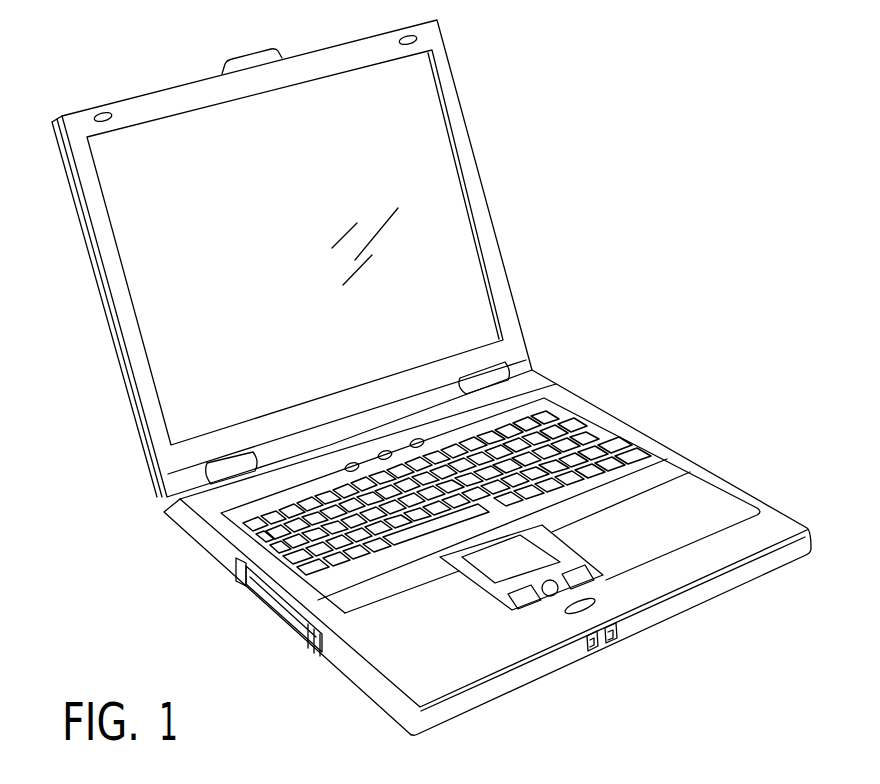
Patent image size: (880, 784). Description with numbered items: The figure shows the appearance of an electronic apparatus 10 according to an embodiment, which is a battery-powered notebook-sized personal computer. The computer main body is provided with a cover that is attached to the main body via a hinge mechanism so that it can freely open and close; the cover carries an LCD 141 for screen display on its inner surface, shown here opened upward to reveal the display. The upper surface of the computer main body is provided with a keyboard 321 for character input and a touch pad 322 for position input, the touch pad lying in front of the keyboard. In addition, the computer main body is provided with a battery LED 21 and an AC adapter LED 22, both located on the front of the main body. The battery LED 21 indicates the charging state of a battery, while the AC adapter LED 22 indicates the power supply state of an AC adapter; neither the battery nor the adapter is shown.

The electronic apparatus 10 is at (660, 158).
The LCD 141 is at (440, 130).
The keyboard 321 is at (257, 583).
The touch pad 322 is at (492, 572).
The battery LED 21 is at (590, 652).
The AC adapter LED 22 is at (620, 637).